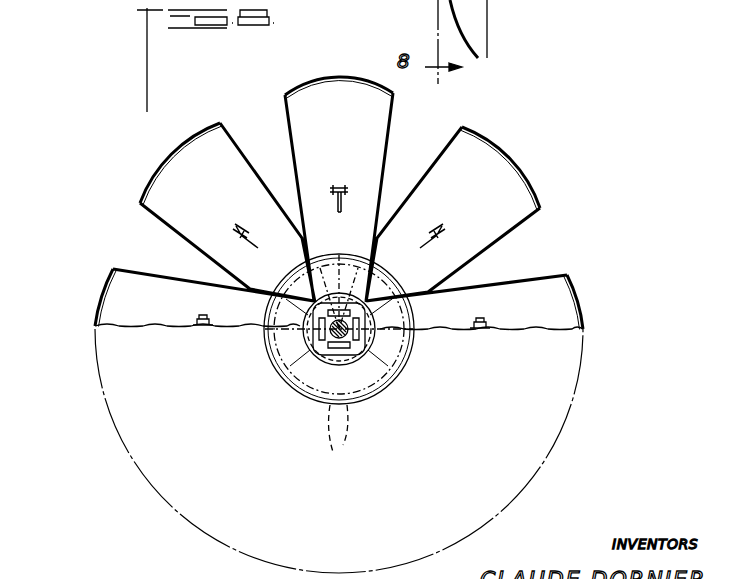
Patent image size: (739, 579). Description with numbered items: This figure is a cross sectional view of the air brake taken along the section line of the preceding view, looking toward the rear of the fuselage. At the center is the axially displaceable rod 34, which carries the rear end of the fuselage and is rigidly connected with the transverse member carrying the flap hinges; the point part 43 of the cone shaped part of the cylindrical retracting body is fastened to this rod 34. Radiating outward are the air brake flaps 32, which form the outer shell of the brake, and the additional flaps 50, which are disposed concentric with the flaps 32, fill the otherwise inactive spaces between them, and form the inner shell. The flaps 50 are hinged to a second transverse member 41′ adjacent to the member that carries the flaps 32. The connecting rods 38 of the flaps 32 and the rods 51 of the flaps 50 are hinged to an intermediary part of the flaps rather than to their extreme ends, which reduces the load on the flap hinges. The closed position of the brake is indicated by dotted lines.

The flaps 32 is at (180, 149).
The axially displaceable rod 34 is at (316, 328).
The connecting rods 38 is at (248, 243).
The transverse member 41′ is at (323, 366).
The point part 43 is at (312, 341).
The additional flaps 50 is at (307, 111).
The rods 51 is at (333, 201).